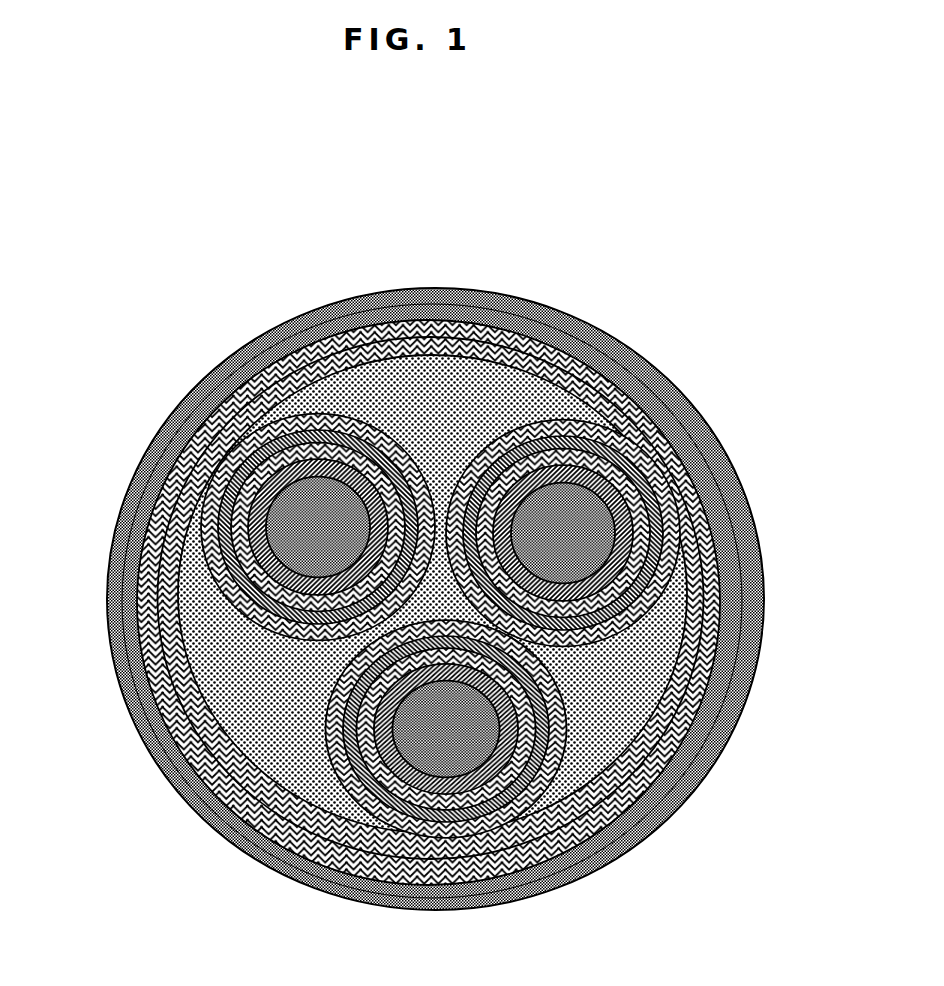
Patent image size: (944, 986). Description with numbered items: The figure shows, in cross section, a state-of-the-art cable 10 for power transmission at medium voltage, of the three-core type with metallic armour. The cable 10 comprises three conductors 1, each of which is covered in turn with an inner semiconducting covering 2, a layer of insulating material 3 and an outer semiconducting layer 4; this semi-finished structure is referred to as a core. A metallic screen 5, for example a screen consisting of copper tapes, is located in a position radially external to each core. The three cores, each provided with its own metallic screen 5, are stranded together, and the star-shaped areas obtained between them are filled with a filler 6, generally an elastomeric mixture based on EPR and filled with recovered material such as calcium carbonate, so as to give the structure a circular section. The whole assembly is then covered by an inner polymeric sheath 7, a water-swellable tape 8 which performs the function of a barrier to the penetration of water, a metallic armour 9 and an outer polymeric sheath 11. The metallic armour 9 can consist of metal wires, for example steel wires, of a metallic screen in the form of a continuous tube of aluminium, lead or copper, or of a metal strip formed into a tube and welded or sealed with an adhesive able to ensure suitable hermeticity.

The conductor 1 is at (569, 483).
The inner semiconducting covering 2 is at (600, 450).
The layer of insulating material 3 is at (660, 490).
The outer semiconducting layer 4 is at (672, 490).
The metallic screen 5 is at (700, 597).
The filler 6 is at (187, 750).
The inner polymeric sheath 7 is at (185, 677).
The water-swellable tape 8 is at (113, 598).
The metallic armour 9 is at (138, 484).
The cable 10 is at (191, 247).
The outer polymeric sheath 11 is at (187, 398).